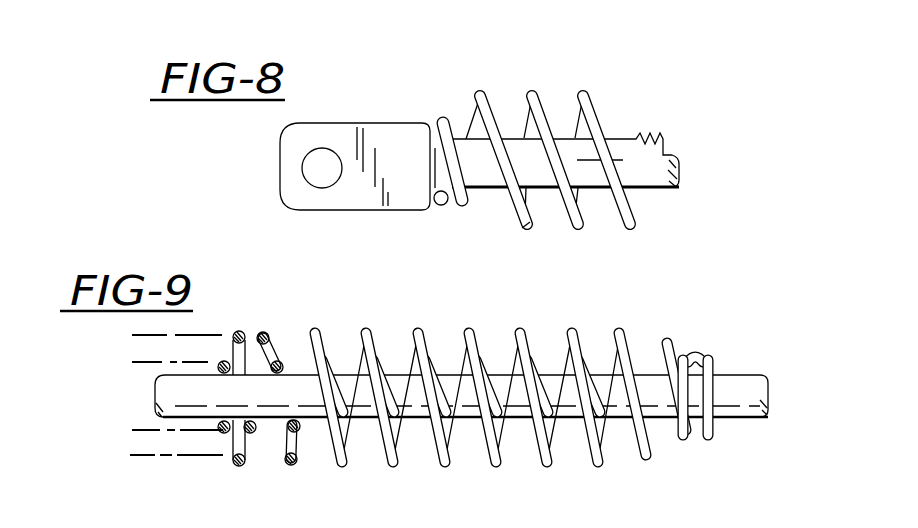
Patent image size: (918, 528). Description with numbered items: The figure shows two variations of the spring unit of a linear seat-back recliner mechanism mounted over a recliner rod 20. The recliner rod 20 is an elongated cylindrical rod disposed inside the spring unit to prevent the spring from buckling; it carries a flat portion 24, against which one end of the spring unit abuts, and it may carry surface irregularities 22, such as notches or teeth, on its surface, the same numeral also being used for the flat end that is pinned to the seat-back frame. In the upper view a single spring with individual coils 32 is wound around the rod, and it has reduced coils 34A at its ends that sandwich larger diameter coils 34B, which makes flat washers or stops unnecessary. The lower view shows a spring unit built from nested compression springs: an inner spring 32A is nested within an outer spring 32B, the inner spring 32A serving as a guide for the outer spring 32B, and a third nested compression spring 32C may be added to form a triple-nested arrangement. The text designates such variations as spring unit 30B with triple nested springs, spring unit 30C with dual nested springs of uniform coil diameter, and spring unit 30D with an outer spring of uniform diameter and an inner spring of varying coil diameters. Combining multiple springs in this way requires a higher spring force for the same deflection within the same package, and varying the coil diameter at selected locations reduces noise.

In FIG. 8, the recliner rod 20 is at (670, 157).
In FIG. 9, the recliner rod 20 is at (740, 377).
In FIG. 8, the surface irregularities 22 is at (663, 140).
In FIG. 8, the flat portion 24 is at (387, 137).
In FIG. 8, the spring unit 30B is at (556, 120).
In FIG. 9, the spring unit 30C is at (486, 391).
In FIG. 9, the spring unit 30D is at (614, 527).
In FIG. 8, the spring coil 32 is at (593, 107).
In FIG. 9, the inner spring 32A is at (378, 363).
In FIG. 9, the outer spring 32B is at (337, 460).
In FIG. 9, the compression spring 32C is at (477, 526).
In FIG. 8, the reduced coils 34A is at (452, 207).
In FIG. 8, the larger diameter coils 34B is at (518, 222).